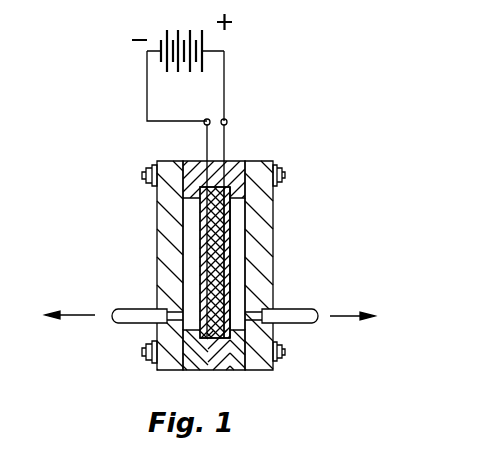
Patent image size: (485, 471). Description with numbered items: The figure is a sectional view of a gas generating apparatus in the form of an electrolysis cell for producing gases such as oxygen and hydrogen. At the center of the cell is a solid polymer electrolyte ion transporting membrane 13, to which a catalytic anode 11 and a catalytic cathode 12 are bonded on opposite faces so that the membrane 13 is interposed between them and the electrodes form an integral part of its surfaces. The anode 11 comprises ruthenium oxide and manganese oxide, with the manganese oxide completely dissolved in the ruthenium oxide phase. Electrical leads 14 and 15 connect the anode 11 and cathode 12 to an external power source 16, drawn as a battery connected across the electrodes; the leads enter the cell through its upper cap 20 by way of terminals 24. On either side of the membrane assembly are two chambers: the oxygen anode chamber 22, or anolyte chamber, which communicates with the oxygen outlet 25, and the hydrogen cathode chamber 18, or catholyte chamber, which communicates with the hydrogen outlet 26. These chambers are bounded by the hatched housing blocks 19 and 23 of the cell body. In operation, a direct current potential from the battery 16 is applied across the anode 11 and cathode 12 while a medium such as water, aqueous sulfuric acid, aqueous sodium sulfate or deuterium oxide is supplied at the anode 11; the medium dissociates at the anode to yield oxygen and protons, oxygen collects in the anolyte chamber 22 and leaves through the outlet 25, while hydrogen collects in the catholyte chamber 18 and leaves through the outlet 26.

The catalytic anode 11 is at (224, 288).
The catalytic cathode 12 is at (198, 263).
The solid polymer electrolyte ion transporting membrane 13 is at (218, 255).
The electrical lead 14 is at (224, 95).
The electrical lead 15 is at (147, 88).
The external power source 16 is at (173, 29).
The hydrogen cathode chamber 18 is at (193, 235).
The housing block 19 is at (170, 208).
The cell cap 20 is at (190, 160).
The oxygen anode chamber 22 is at (229, 268).
The housing block 23 is at (263, 207).
The electrode leads 24 is at (232, 160).
The oxygen outlet 25 is at (293, 311).
The hydrogen outlet 26 is at (133, 325).